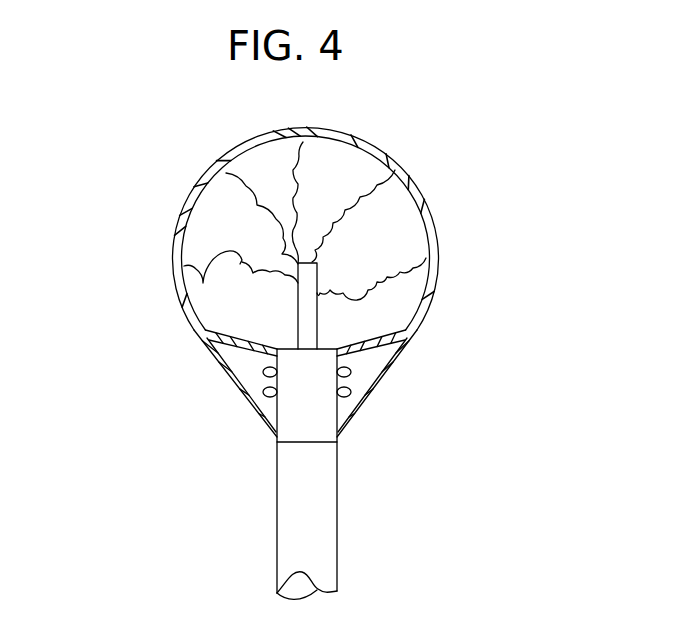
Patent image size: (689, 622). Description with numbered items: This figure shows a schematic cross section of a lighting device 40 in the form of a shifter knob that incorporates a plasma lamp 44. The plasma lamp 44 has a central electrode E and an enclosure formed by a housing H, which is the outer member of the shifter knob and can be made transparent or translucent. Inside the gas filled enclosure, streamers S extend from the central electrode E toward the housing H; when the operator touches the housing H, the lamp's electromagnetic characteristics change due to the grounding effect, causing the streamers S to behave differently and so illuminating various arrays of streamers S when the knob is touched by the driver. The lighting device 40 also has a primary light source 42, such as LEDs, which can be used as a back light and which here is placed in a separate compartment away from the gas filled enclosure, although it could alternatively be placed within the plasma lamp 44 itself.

The lighting device 40 is at (466, 180).
The primary light source 42 is at (262, 373).
The plasma lamp 44 is at (362, 317).
The housing H is at (181, 210).
The streamers S is at (243, 202).
The central electrode E is at (318, 272).